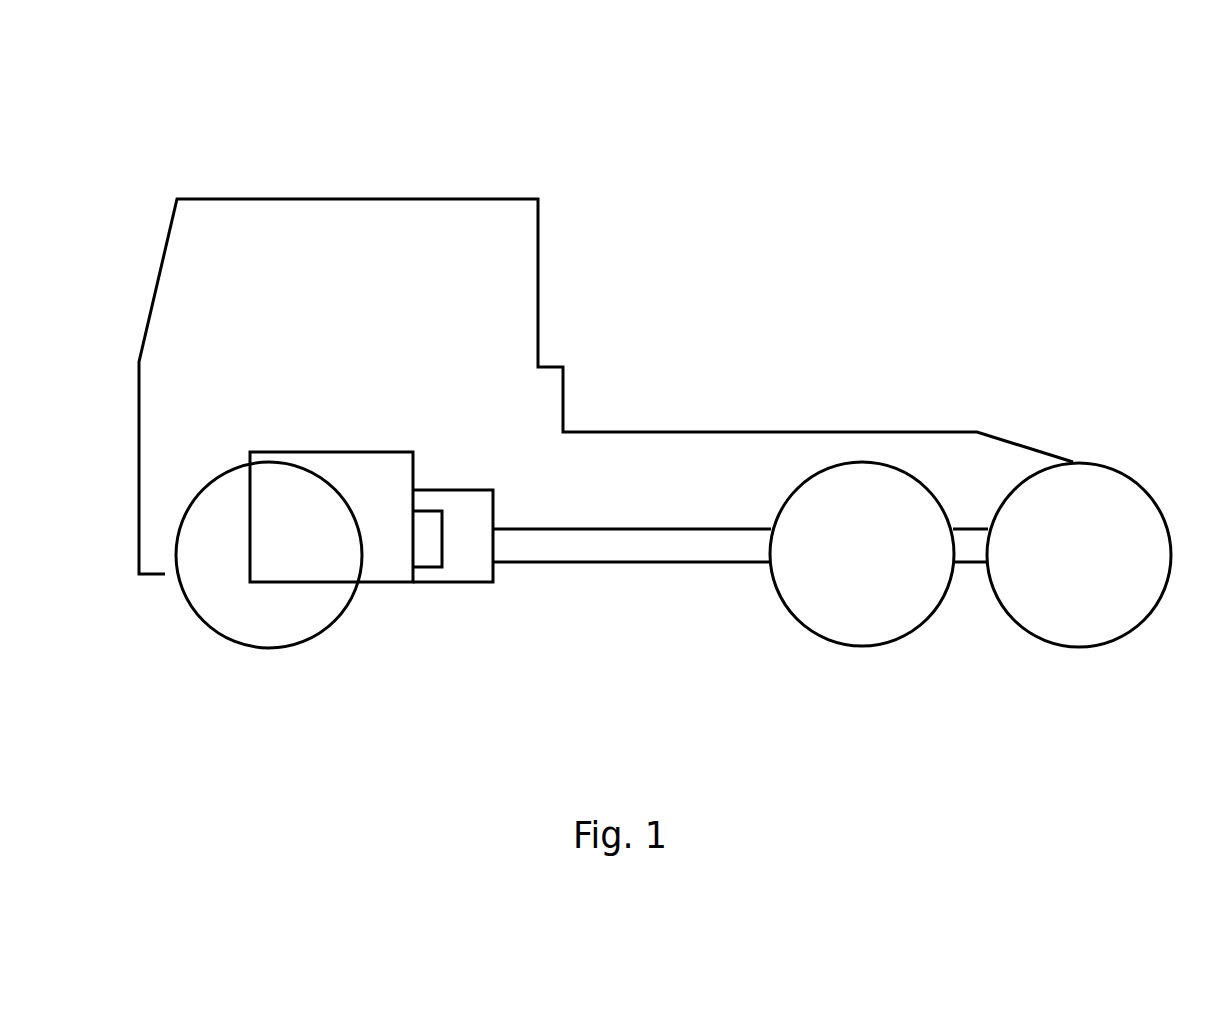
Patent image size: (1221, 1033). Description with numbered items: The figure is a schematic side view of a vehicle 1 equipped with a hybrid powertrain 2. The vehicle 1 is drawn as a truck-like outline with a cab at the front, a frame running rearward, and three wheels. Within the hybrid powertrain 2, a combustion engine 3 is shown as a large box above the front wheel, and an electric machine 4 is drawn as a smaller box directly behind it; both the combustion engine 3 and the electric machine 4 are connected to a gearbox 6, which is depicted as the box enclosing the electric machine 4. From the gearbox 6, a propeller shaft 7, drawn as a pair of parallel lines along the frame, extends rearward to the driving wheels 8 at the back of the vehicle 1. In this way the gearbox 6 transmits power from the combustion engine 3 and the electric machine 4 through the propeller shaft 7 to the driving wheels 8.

The vehicle 1 is at (538, 130).
The hybrid powertrain 2 is at (397, 554).
The combustion engine 3 is at (300, 450).
The electric machine 4 is at (430, 508).
The gearbox 6 is at (482, 584).
The propeller shaft 7 is at (618, 564).
The driving wheels 8 is at (912, 634).